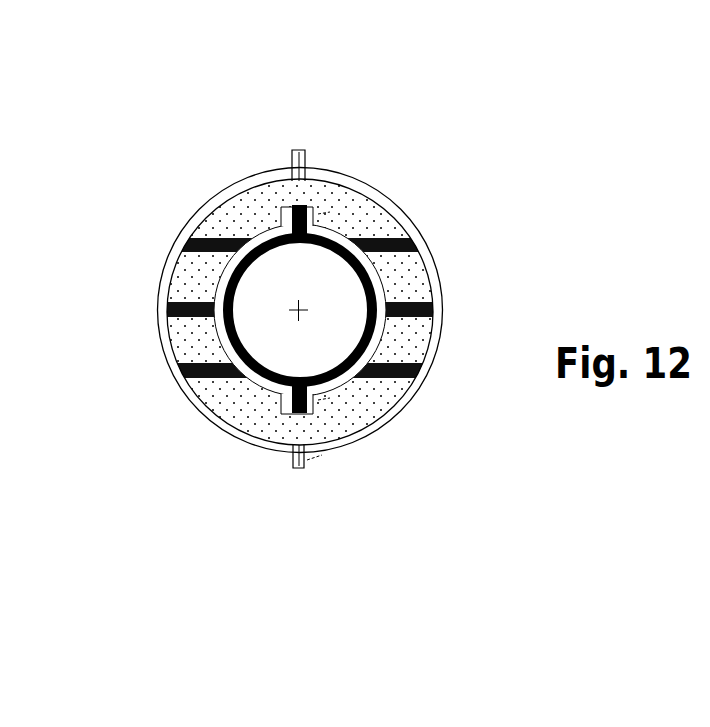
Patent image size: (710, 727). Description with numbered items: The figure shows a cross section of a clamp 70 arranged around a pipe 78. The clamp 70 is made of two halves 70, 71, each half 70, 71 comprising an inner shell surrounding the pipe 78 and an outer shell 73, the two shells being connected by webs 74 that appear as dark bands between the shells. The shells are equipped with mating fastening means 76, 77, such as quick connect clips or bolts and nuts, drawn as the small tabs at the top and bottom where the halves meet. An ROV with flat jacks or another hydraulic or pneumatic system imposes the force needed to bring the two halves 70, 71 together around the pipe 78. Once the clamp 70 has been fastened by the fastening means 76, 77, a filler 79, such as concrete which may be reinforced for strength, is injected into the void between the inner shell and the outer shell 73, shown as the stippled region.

The clamp 70 is at (252, 148).
The half 71 is at (442, 332).
The outer shell 73 is at (182, 400).
The web 74 is at (413, 300).
The fastening means 76 is at (310, 158).
The fastening means 77 is at (306, 157).
The pipe 78 is at (353, 313).
The filler 79 is at (397, 417).